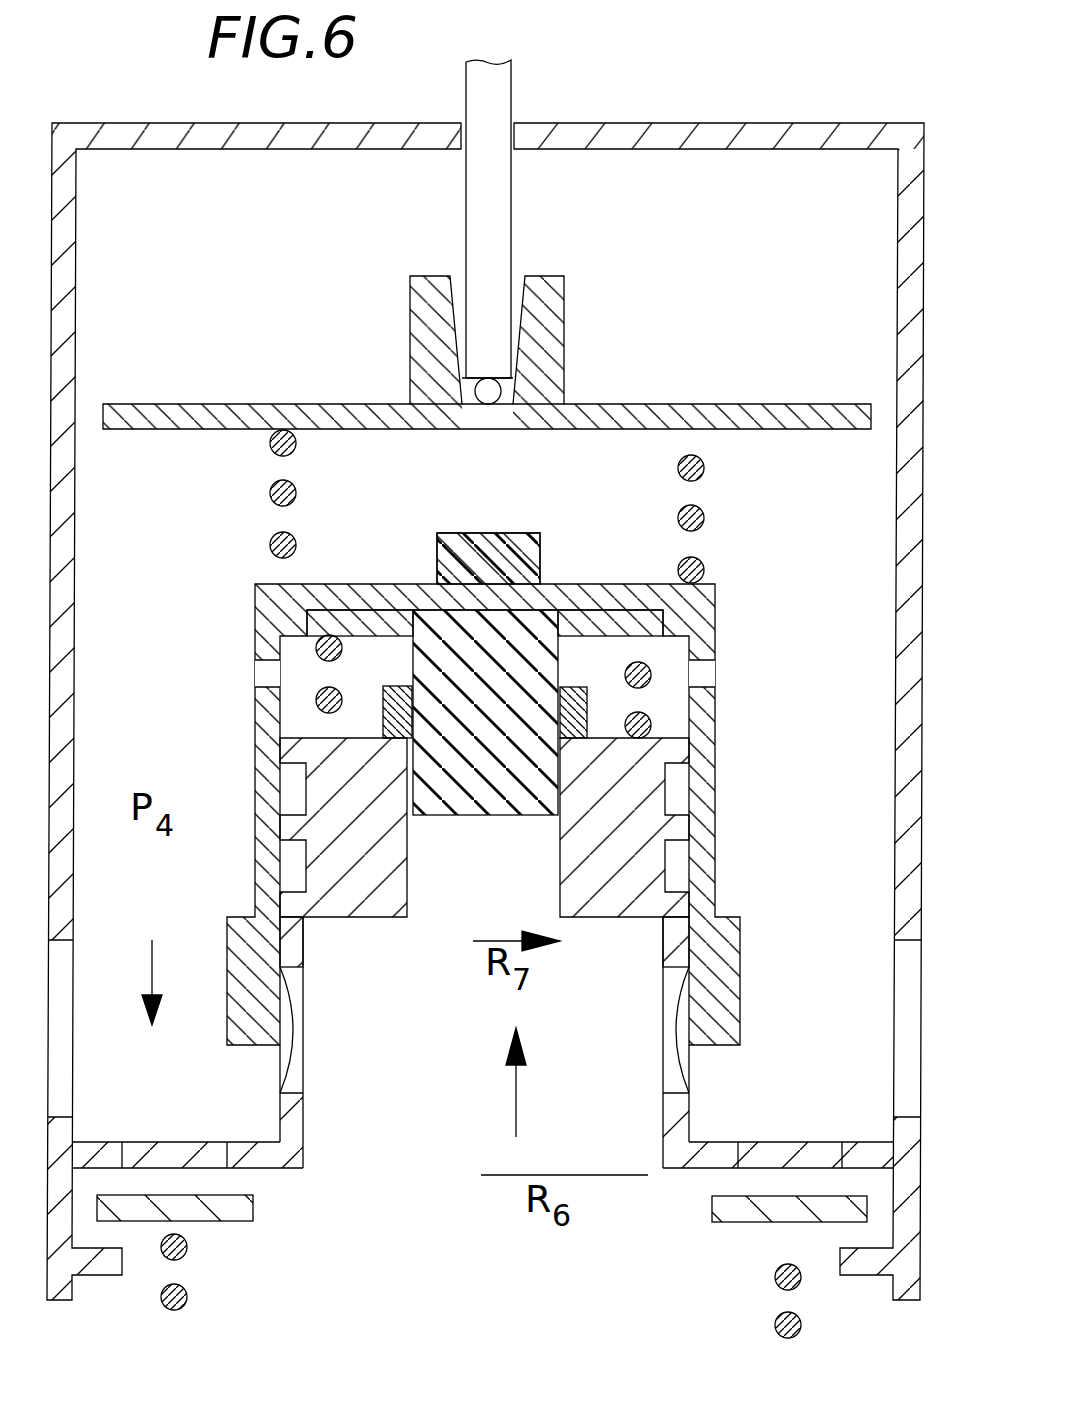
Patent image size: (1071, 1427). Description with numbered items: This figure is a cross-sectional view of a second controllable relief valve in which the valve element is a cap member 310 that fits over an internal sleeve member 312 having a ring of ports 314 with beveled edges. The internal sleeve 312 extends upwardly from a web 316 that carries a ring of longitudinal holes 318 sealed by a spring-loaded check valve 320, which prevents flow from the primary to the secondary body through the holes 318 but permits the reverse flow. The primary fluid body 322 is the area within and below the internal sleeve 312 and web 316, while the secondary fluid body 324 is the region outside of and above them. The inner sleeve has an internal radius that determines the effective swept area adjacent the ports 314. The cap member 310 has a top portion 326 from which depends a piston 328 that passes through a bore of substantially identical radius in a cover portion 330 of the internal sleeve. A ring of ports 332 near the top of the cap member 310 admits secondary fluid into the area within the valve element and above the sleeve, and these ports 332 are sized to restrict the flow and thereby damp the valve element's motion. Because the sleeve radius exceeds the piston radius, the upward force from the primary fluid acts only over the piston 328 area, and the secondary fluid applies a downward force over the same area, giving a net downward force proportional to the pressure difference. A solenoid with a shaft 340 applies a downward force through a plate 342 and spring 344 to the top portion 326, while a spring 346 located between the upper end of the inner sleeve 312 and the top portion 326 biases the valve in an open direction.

The cap member 310 is at (541, 767).
The internal sleeve member 312 is at (300, 947).
The ring of ports 314 is at (298, 1056).
The web 316 is at (250, 1162).
The longitudinal holes 318 is at (160, 1160).
The spring-loaded check valve 320 is at (235, 1240).
The primary fluid body 322 is at (551, 1088).
The secondary fluid body 324 is at (141, 962).
The top portion 326 is at (400, 592).
The piston 328 is at (468, 806).
The cover portion 330 is at (615, 905).
The ring of ports 332 is at (700, 668).
The shaft 340 is at (490, 212).
The plate 342 is at (524, 408).
The spring 344 is at (705, 517).
The spring 346 is at (316, 648).